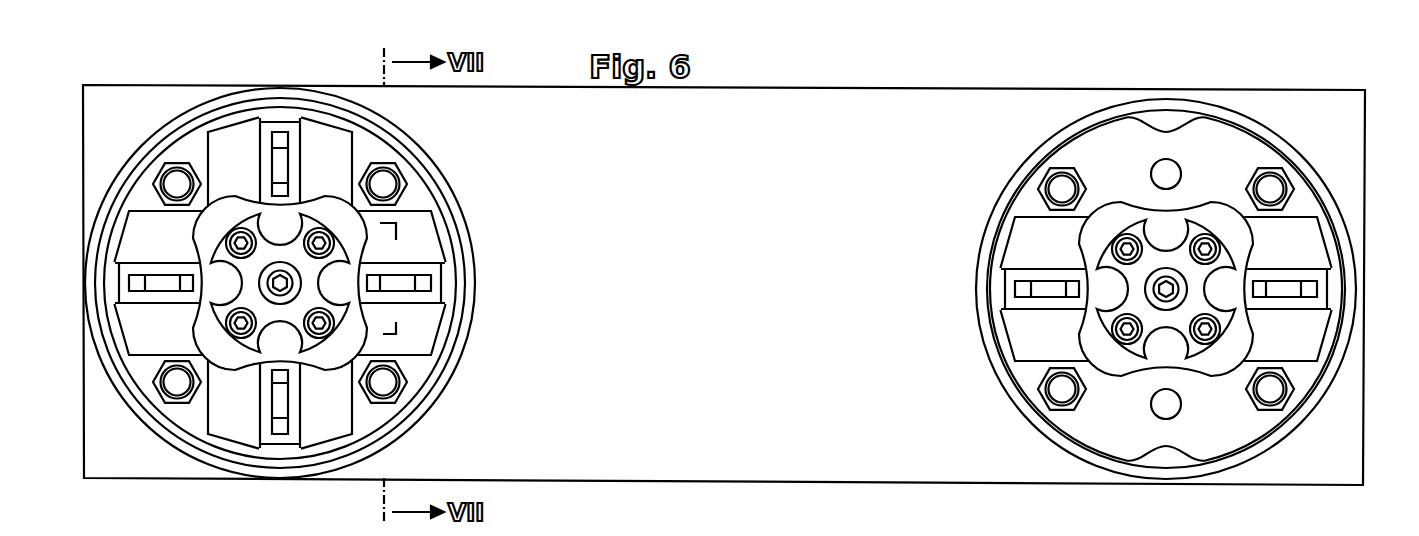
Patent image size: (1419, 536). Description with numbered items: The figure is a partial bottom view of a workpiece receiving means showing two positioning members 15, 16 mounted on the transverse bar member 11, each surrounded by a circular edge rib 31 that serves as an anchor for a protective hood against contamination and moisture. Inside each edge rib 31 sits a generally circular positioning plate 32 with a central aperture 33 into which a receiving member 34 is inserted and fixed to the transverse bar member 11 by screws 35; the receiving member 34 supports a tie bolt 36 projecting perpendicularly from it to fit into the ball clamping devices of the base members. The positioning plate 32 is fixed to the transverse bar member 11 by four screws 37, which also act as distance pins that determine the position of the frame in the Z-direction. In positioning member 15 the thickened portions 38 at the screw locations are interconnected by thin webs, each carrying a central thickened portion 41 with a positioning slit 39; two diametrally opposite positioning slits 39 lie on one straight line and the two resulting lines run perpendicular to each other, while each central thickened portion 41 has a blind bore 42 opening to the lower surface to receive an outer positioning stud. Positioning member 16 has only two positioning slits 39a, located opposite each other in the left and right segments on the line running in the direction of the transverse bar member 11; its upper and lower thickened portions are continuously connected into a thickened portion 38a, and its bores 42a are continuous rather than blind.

The transverse bar member 11 is at (818, 106).
The positioning member 15 is at (448, 137).
The positioning member 16 is at (1037, 126).
The circular edge rib 31 is at (440, 355).
The positioning plate 32 is at (407, 187).
The central aperture 33 is at (350, 233).
The receiving member 34 is at (343, 252).
The screws 35 is at (384, 341).
The tie bolt 36 is at (303, 277).
The screws 37 is at (402, 394).
The thickened portions 38 is at (190, 150).
The thickened portion 38a is at (1117, 145).
The positioning slits 39 is at (281, 124).
The positioning slits 39a is at (1006, 290).
The central thickened portion 41 is at (163, 283).
The blind bore 42 is at (276, 163).
The bores 42a is at (1176, 165).